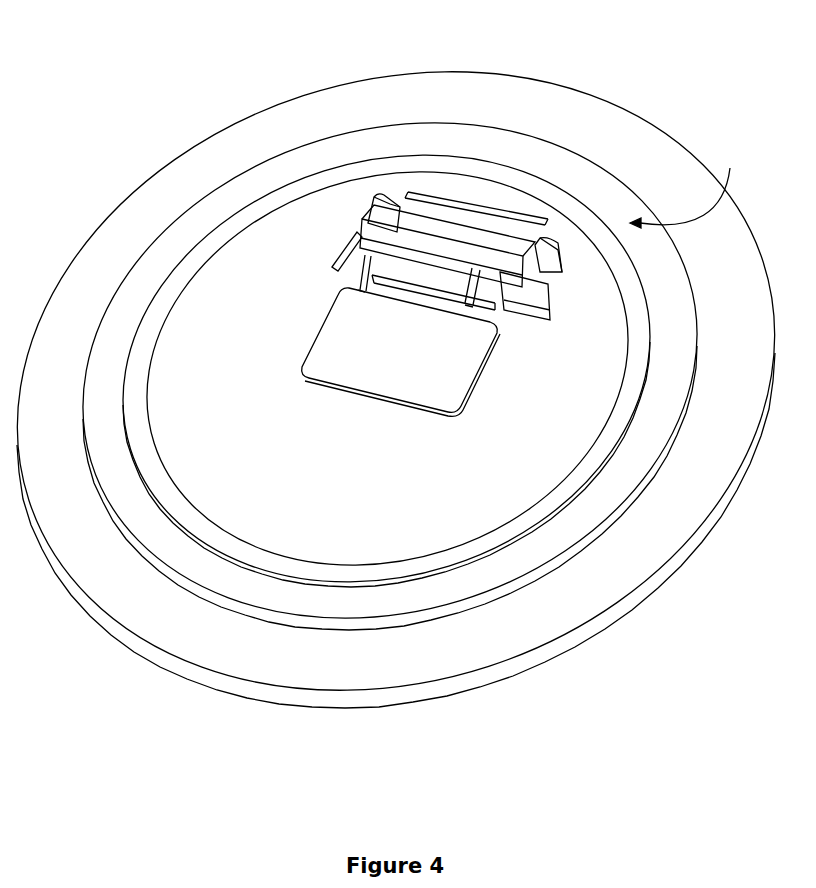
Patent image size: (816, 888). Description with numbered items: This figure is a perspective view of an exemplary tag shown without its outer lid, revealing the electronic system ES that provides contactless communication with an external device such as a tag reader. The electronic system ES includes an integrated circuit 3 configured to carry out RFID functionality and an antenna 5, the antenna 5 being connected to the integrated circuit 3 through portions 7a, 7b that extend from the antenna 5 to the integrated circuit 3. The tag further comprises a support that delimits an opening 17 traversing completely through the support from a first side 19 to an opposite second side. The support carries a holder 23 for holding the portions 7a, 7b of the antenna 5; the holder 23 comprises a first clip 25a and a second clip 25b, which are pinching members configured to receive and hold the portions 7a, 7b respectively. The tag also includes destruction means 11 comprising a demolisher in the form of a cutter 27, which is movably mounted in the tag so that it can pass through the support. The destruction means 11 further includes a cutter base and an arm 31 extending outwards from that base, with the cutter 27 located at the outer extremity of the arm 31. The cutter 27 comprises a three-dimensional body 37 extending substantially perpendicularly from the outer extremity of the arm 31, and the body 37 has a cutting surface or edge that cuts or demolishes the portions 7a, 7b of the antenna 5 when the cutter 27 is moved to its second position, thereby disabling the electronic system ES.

The integrated circuit 3 is at (330, 329).
The antenna 5 is at (243, 552).
The portion of the antenna 7a is at (362, 265).
The portion of the antenna 7b is at (513, 307).
The destruction means 11 is at (355, 225).
The opening 17 is at (336, 240).
The first side 19 is at (200, 360).
The holder 23 is at (457, 225).
The first clip 25a is at (390, 208).
The second clip 25b is at (520, 232).
The cutter 27 is at (480, 267).
The arm 31 is at (435, 275).
The three-dimensional body 37 is at (530, 280).
The electronic system ES is at (685, 189).